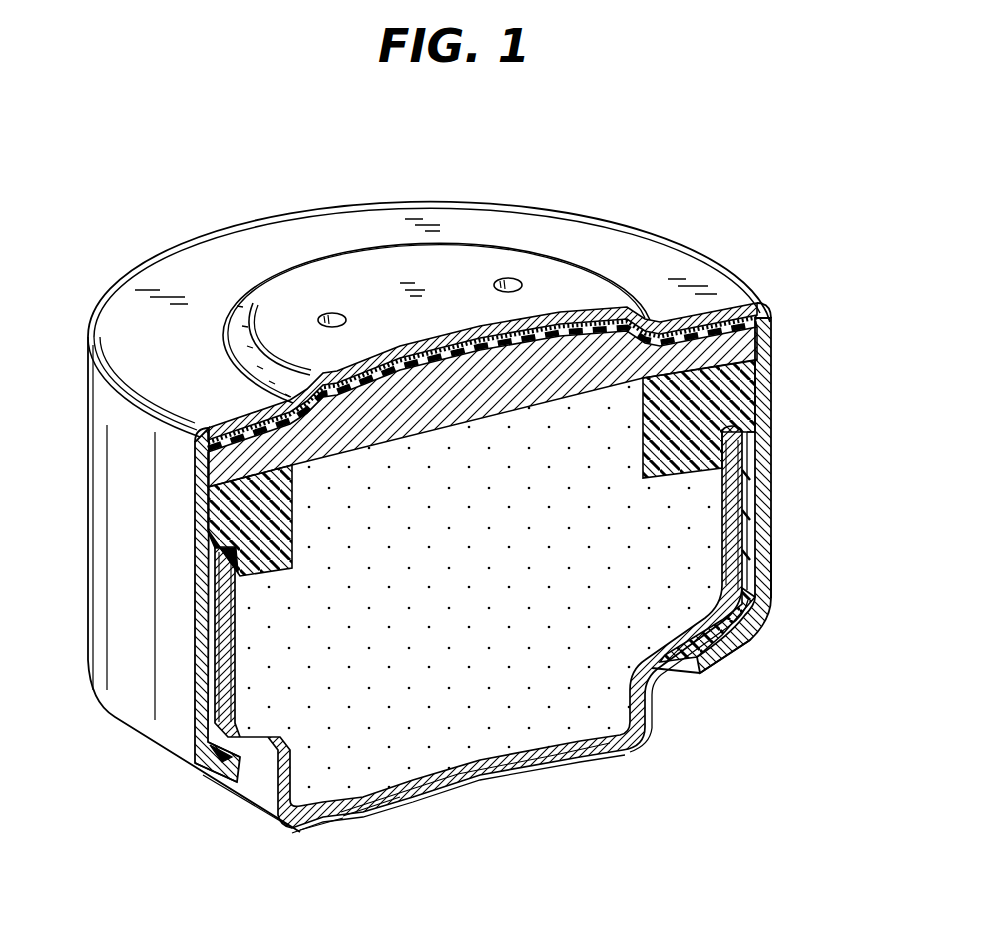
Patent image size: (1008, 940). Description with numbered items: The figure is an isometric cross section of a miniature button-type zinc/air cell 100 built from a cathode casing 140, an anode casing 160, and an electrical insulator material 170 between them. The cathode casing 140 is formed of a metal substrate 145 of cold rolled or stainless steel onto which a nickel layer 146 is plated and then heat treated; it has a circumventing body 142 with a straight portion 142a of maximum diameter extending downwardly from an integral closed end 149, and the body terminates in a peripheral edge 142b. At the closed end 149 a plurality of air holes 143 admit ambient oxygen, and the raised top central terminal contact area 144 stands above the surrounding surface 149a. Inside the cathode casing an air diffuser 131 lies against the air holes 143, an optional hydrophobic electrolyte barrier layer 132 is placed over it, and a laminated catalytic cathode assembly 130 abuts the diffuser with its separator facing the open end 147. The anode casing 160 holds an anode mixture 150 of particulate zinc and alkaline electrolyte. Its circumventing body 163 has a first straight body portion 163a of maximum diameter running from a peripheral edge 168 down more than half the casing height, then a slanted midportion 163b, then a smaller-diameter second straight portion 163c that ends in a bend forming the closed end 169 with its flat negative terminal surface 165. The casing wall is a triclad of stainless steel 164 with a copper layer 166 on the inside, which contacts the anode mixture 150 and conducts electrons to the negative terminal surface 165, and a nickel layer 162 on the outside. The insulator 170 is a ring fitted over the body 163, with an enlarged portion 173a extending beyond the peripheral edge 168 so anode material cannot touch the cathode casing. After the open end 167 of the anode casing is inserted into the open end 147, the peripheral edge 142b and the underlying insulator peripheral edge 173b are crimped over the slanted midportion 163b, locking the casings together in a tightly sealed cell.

The zinc/air cell 100 is at (207, 192).
The catalytic cathode assembly 130 is at (745, 347).
The air diffuser 131 is at (768, 312).
The electrolyte barrier layer 132 is at (762, 326).
The cathode casing 140 is at (653, 247).
The circumventing body 142 is at (762, 462).
The straight portion 142a is at (760, 576).
The peripheral edge 142b is at (720, 662).
The air holes 143 is at (332, 318).
The terminal contact area 144 is at (455, 265).
The metal substrate 145 is at (565, 322).
The nickel layer 146 is at (385, 280).
The open end 147 is at (243, 793).
The closed end 149 is at (162, 264).
The surrounding surface 149a is at (272, 240).
The anode mixture 150 is at (553, 720).
The anode casing 160 is at (643, 752).
The nickel layer 162 is at (530, 770).
The circumventing body 163 is at (220, 630).
The first straight body portion 163a is at (730, 535).
The slanted midportion 163b is at (650, 677).
The second straight portion 163c is at (640, 715).
The stainless steel 164 is at (481, 772).
The negative terminal surface 165 is at (406, 800).
The copper layer 166 is at (325, 815).
The open end 167 is at (220, 545).
The peripheral edge 168 is at (730, 450).
The closed end 169 is at (361, 815).
The electrical insulator material 170 is at (730, 495).
The enlarged portion 173a is at (705, 388).
The peripheral edge 173b is at (745, 645).